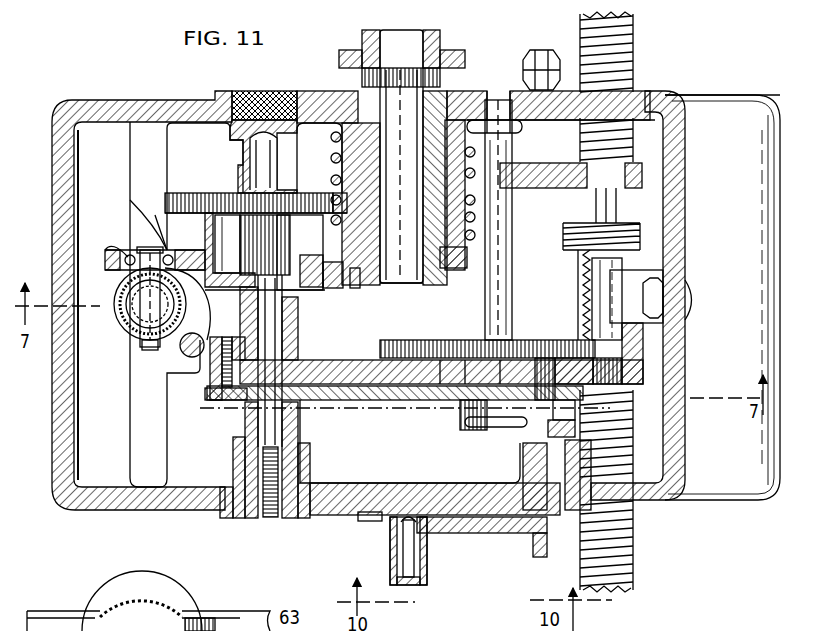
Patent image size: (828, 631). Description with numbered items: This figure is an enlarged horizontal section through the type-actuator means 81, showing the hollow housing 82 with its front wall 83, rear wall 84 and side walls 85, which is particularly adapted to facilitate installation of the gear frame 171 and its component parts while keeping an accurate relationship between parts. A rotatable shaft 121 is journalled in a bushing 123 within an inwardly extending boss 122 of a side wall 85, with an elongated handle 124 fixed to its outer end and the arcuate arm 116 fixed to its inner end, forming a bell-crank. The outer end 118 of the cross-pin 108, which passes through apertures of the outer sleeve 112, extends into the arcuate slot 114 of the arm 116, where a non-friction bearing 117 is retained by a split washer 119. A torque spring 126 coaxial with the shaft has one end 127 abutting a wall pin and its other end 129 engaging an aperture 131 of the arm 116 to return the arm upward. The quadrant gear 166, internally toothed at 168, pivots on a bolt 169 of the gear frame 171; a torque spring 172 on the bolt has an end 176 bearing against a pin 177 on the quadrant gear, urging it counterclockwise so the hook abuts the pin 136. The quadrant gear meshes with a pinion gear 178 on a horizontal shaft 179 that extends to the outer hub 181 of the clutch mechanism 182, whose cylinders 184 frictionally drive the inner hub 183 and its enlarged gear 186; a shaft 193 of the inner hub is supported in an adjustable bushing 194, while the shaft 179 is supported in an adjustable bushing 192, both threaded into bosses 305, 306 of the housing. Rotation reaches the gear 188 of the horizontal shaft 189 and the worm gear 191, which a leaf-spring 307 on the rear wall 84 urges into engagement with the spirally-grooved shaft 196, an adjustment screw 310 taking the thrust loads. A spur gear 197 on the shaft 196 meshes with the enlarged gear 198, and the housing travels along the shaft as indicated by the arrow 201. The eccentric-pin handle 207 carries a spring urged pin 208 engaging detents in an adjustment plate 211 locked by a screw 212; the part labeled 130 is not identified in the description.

The housing 82 is at (176, 100).
The front wall 83 is at (58, 232).
The side wall 85 is at (660, 90).
The type-actuator means 81 is at (672, 95).
The rear wall 84 is at (742, 102).
The adjustable bushing 194 is at (262, 91).
The boss 305 is at (250, 141).
The torque spring 126 is at (333, 144).
The bushing 123 is at (404, 157).
The handle 124 is at (450, 57).
The shaft 121 is at (401, 285).
The spring end 129 is at (355, 288).
The aperture 131 is at (338, 288).
The adjustment screw 310 is at (540, 50).
The spring end 127 is at (490, 136).
The arcuate arm 116 is at (107, 260).
The boss 122 is at (470, 236).
The spirally-grooved shaft 196 is at (628, 52).
The worm gear 191 is at (580, 239).
The horizontal shaft 189 is at (582, 268).
The leaf-spring 307 is at (600, 300).
The arrow 201 is at (712, 320).
The gear frame 171 is at (355, 362).
The enlarged gear 198 is at (423, 336).
The quadrant gear 166 is at (373, 402).
The pinion gear 178 is at (298, 349).
The horizontal shaft 179 is at (298, 326).
The enlarged gear 186 is at (193, 193).
The shaft 193 is at (262, 179).
The outer hub 181 is at (207, 240).
The cylinders 184 is at (243, 230).
The inner hub 183 is at (262, 247).
The clutch mechanism 182 is at (265, 252).
The outer sleeve 112 is at (186, 304).
The adjustable bushing 192 is at (300, 430).
The boss 306 is at (238, 470).
The gear 130 is at (140, 302).
The pin 136 is at (130, 292).
The arcuate slot 114 is at (215, 244).
The internal teeth 168 is at (203, 342).
The pin or bolt 169 is at (207, 395).
The cross-pin 108 is at (128, 396).
The non-friction bearing 117 is at (128, 255).
The outer end of pin 118 is at (150, 247).
The split washer 119 is at (158, 215).
The handle 207 is at (482, 533).
The pin 177 is at (482, 428).
The spring end 176 is at (483, 430).
The torque spring 172 is at (548, 427).
The screw 212 is at (362, 521).
The adjustment plate 211 is at (430, 560).
The spring urged pin 208 is at (405, 524).
The gear 188 is at (632, 343).
The spur gear 197 is at (650, 370).